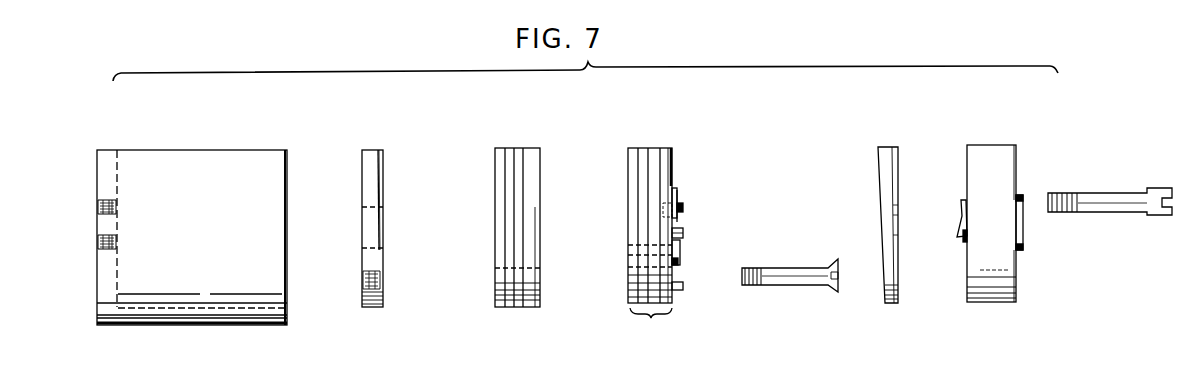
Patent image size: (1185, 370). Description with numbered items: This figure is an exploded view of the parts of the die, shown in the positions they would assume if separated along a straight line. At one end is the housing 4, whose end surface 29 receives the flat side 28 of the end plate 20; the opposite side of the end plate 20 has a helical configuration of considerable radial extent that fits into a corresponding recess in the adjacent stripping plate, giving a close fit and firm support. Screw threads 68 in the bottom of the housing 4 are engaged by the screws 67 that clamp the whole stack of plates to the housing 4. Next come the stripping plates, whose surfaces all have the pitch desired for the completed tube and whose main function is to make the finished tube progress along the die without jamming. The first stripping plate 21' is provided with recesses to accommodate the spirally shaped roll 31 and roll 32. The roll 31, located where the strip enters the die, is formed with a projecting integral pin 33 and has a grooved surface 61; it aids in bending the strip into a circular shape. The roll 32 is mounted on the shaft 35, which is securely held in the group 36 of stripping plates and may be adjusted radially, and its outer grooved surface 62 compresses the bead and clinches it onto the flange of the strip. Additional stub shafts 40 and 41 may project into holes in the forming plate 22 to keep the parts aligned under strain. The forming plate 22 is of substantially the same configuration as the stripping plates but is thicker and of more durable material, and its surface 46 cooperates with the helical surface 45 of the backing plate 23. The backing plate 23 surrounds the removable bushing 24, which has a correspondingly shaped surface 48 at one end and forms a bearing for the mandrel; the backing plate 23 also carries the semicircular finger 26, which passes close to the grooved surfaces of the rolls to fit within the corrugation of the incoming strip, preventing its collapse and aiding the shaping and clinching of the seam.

The housing 4 is at (175, 328).
The surface 29 is at (118, 172).
The screw threads 68 is at (94, 216).
The end plate 20 is at (370, 160).
The flat side 28 is at (361, 264).
The first stripping plate 21' is at (665, 215).
The grooved surface 61 is at (676, 190).
The roll 31 is at (679, 198).
The pin 33 is at (684, 206).
The stub shaft 41 is at (683, 236).
The roll 32 is at (682, 260).
The grooved shaped surface 62 is at (680, 262).
The stub shaft 40 is at (683, 288).
The shaft 35 is at (660, 256).
The group of stripping plates 36 is at (651, 324).
The forming plate 22 is at (885, 152).
The surface 46 is at (893, 186).
The backing plate 23 is at (992, 155).
The bushing 24 is at (1023, 200).
The semicircular finger 26 is at (959, 222).
The surface 48 is at (963, 236).
The helical surface 45 is at (970, 264).
The screws 67 is at (1100, 194).